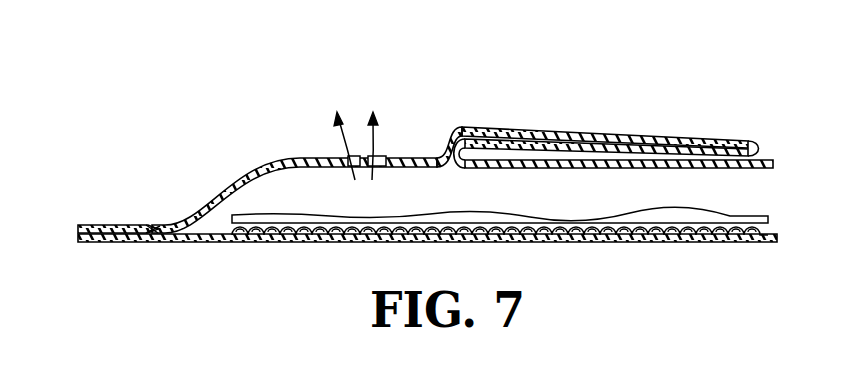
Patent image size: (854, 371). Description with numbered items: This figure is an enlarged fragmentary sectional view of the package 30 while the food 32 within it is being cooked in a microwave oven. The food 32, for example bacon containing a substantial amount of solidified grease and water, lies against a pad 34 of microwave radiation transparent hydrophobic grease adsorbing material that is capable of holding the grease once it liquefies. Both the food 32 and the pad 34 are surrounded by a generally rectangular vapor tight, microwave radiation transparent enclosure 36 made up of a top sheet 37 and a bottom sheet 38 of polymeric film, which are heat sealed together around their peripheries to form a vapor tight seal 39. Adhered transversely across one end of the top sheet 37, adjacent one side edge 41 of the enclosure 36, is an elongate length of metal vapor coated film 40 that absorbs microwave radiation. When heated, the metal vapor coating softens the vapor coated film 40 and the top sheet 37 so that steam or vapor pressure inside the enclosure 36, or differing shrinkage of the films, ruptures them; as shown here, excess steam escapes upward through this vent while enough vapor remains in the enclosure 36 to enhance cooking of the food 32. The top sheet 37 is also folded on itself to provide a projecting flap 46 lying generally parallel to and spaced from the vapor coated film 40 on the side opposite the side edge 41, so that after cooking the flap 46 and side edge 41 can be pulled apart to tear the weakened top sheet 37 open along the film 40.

The package 30 is at (678, 108).
The food 32 is at (688, 214).
The pad 34 is at (693, 246).
The enclosure 36 is at (293, 257).
The top sheet 37 is at (292, 157).
The bottom sheet 38 is at (347, 237).
The vapor tight seal 39 is at (153, 227).
The metal vapor coated film 40 is at (379, 156).
The side edge 41 is at (81, 224).
The projecting flap 46 is at (573, 127).